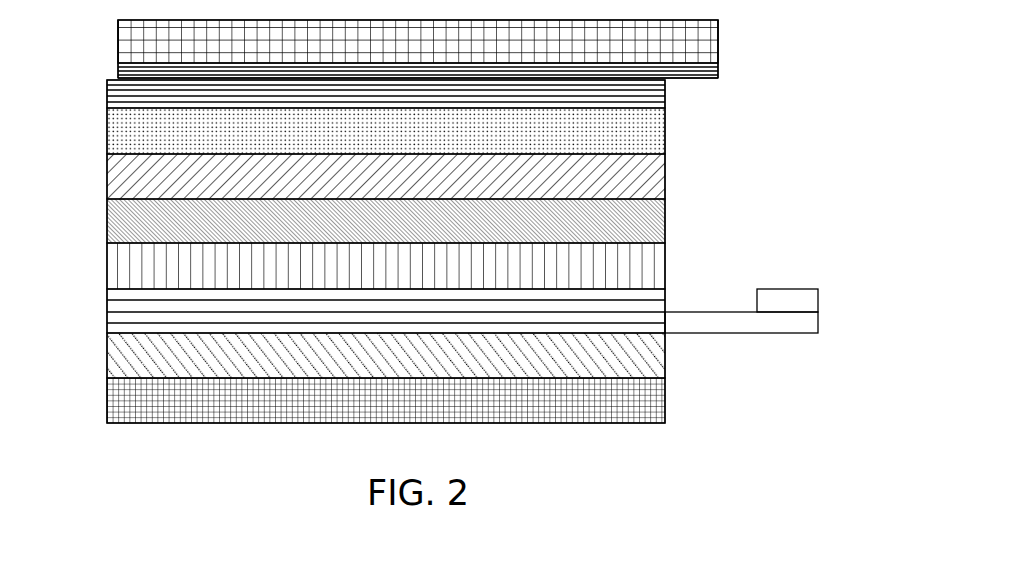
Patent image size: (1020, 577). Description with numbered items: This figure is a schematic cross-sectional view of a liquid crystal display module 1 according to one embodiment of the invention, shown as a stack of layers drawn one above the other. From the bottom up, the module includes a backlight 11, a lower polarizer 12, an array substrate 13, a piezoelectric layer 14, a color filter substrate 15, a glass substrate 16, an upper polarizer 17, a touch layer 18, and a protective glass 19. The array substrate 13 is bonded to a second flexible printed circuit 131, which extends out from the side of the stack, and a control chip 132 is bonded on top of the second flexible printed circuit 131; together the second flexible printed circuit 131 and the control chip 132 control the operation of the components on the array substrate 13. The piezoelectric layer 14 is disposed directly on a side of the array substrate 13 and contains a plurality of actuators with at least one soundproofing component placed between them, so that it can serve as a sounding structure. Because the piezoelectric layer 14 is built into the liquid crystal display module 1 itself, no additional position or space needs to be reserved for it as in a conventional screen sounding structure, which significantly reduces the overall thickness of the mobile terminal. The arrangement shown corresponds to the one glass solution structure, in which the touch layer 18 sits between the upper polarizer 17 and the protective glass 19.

The liquid crystal display module 1 is at (686, 95).
The backlight 11 is at (107, 398).
The lower polarizer 12 is at (107, 360).
The array substrate 13 is at (470, 302).
The second flexible printed circuit 131 is at (818, 333).
The control chip 132 is at (818, 294).
The piezoelectric layer 14 is at (107, 268).
The color filter substrate 15 is at (107, 228).
The glass substrate 16 is at (107, 178).
The upper polarizer 17 is at (107, 135).
The touch layer 18 is at (108, 86).
The protective glass 19 is at (118, 45).